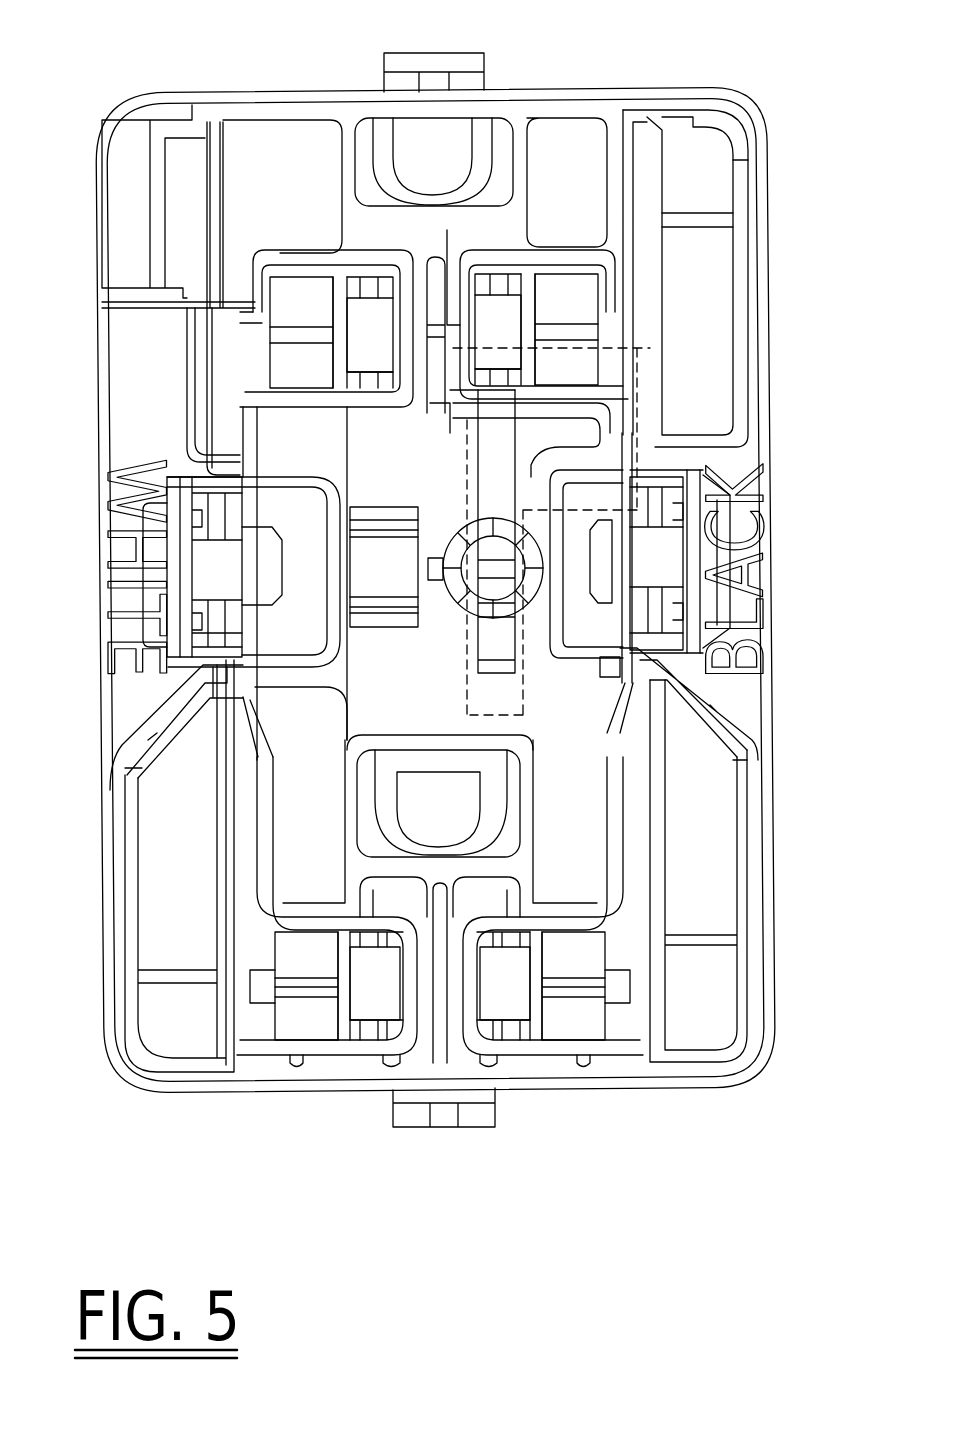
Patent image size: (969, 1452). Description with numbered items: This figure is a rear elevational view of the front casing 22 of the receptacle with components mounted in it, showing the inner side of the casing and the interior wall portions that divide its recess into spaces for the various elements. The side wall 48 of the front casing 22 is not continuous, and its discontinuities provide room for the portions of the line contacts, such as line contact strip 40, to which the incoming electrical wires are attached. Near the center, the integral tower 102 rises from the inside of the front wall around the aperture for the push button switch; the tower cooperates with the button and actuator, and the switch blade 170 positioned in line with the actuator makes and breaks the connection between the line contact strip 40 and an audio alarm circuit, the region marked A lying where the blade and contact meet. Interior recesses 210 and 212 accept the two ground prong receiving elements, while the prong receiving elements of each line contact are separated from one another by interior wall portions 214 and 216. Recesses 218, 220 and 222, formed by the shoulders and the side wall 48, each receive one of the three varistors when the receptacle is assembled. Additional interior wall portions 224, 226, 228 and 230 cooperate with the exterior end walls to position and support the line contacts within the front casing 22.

The front casing 22 is at (852, 553).
The line contact strip 40 is at (605, 398).
The side wall 48 is at (773, 820).
The tower 102 is at (447, 595).
The switch blade 170 is at (497, 503).
The interior recess 210 is at (457, 142).
The interior recess 212 is at (432, 793).
The interior wall portion 214 is at (442, 1043).
The interior wall portion 216 is at (430, 268).
The recess 218 is at (713, 893).
The recess 220 is at (725, 320).
The recess 222 is at (165, 878).
The interior wall portion 224 is at (542, 253).
The interior wall portion 226 is at (300, 257).
The interior wall portion 228 is at (333, 847).
The interior wall portion 230 is at (597, 845).
The terminal region A is at (623, 363).